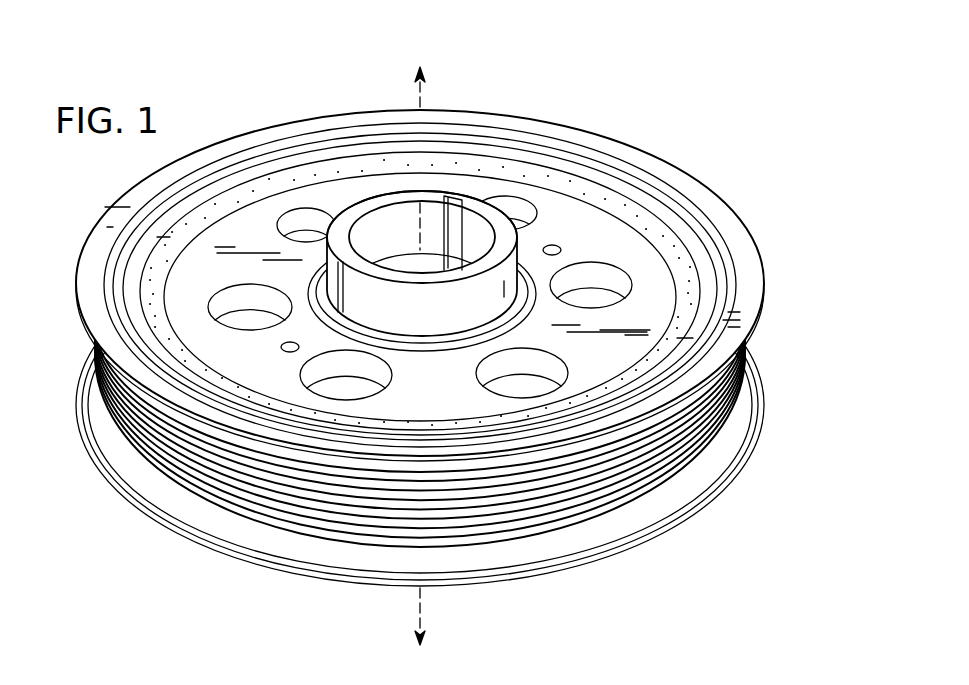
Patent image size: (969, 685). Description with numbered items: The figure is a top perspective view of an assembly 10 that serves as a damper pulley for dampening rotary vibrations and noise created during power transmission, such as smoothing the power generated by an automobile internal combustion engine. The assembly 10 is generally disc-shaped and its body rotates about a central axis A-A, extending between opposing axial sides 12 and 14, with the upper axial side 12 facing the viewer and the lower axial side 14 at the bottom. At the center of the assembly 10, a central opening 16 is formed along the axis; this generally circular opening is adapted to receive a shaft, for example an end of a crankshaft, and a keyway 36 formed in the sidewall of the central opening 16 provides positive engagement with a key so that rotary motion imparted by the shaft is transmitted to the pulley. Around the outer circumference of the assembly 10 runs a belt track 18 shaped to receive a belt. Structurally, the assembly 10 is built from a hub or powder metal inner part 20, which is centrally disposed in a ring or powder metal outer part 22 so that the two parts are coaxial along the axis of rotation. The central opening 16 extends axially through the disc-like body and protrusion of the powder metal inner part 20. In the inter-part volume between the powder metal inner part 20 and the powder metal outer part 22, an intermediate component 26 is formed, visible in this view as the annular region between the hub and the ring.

The assembly 10 is at (722, 93).
The axial side 12 is at (528, 94).
The axial side 14 is at (644, 574).
The central opening 16 is at (396, 236).
The belt track 18 is at (693, 459).
The powder metal inner part 20 is at (603, 240).
The powder metal outer part 22 is at (744, 231).
The intermediate component 26 is at (155, 304).
The keyway 36 is at (456, 233).